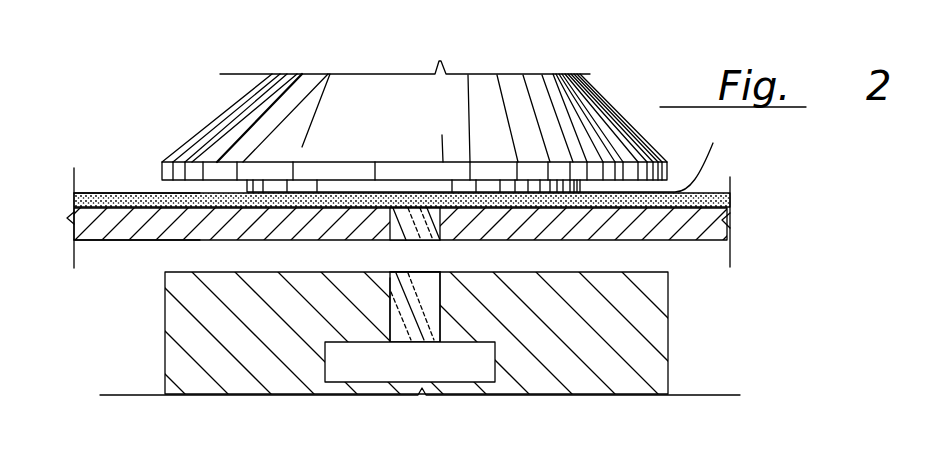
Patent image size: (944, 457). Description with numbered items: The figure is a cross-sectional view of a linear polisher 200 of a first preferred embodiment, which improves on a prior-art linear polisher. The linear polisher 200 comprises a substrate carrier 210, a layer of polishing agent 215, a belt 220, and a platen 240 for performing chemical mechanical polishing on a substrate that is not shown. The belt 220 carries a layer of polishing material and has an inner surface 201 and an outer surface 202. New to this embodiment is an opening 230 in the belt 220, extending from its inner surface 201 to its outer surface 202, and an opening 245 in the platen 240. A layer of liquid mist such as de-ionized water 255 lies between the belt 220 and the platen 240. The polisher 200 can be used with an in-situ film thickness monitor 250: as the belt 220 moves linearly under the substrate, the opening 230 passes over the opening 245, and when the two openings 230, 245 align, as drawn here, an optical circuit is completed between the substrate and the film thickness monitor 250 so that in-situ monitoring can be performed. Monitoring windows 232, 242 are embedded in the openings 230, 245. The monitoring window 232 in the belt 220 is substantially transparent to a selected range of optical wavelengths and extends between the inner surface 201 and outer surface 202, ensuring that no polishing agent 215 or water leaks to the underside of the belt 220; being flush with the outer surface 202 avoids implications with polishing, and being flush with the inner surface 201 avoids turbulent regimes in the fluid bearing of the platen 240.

The linear polisher 200 is at (177, 92).
The inner surface 201 is at (110, 242).
The outer surface 202 is at (107, 200).
The substrate carrier 210 is at (509, 159).
The layer of polishing agent 215 is at (742, 200).
The belt 220 is at (735, 229).
The opening in the belt 230 is at (406, 243).
The monitoring window 232 is at (408, 218).
The platen 240 is at (668, 310).
The monitoring window 242 is at (428, 272).
The opening in the platen 245 is at (403, 270).
The in-situ film thickness monitor 250 is at (497, 372).
The de-ionized water 255 is at (632, 258).